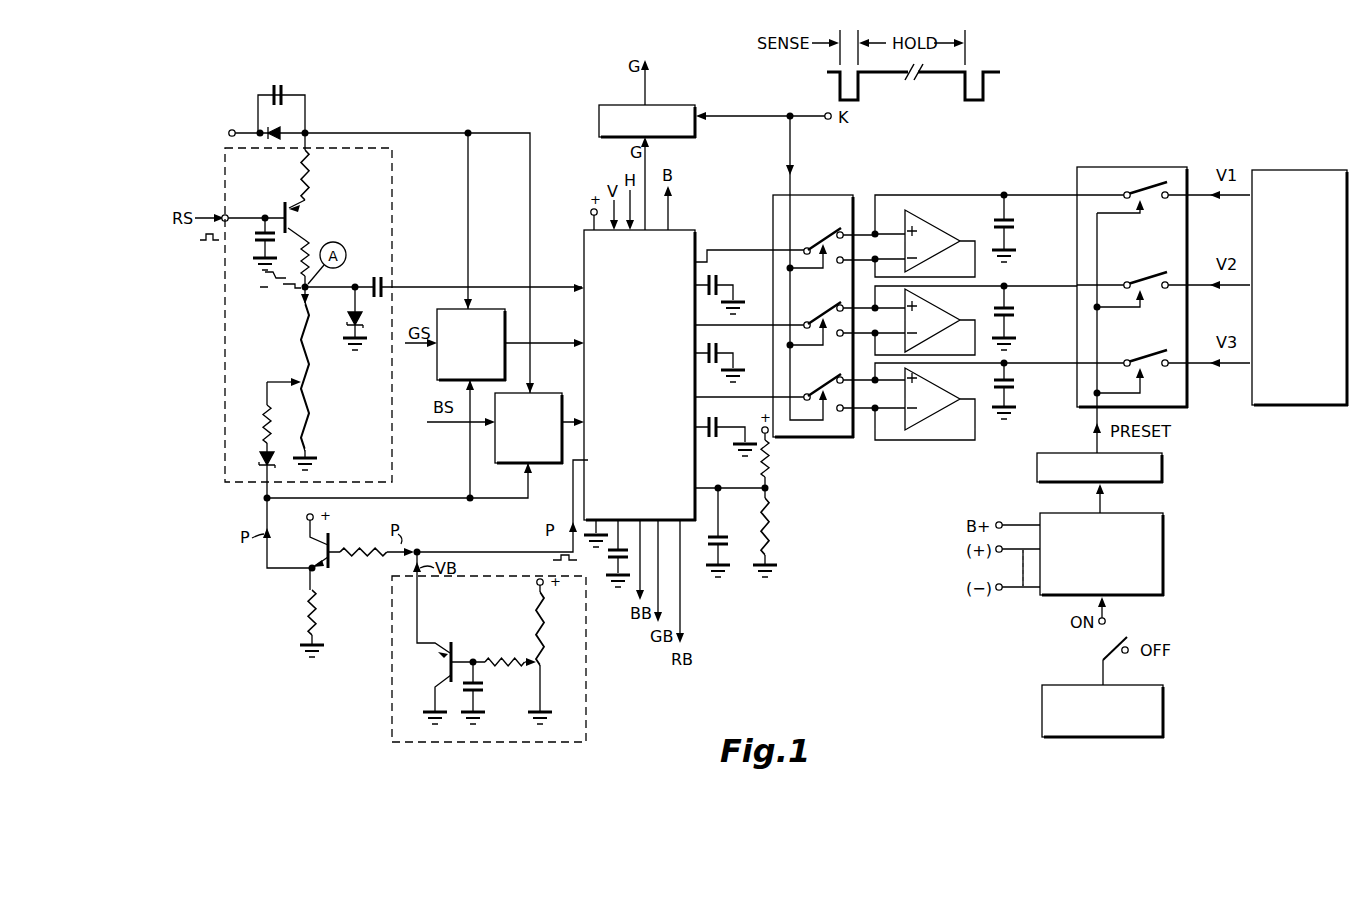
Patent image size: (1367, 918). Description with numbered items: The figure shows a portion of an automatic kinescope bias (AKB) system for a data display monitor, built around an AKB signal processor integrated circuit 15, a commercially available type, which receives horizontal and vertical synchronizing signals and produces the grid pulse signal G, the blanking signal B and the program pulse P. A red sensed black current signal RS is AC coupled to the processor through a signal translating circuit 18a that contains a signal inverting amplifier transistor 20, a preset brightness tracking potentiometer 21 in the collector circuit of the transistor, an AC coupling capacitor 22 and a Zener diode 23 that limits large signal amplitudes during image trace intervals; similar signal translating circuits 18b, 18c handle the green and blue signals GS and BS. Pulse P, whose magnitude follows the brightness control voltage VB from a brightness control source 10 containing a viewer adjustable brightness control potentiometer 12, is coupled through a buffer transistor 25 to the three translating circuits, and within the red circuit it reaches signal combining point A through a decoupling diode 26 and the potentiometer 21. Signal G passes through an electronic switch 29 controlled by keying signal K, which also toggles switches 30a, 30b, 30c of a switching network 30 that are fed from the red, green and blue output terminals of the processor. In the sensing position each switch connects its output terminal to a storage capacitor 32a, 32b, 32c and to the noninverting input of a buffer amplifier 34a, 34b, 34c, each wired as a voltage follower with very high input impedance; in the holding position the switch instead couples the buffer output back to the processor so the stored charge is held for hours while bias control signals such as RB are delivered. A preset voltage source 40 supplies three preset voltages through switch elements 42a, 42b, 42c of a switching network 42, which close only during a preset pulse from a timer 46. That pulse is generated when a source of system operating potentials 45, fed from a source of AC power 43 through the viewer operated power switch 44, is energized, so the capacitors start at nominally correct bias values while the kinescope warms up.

The brightness control source 10 is at (586, 698).
The brightness control potentiometer 12 is at (526, 640).
The AKB signal processor integrated circuit 15 is at (651, 330).
The signal translating circuit 18a is at (393, 213).
The signal translating circuit 18b is at (505, 320).
The signal translating circuit 18c is at (513, 468).
The signal inverting amplifier transistor 20 is at (333, 225).
The preset brightness tracking potentiometer 21 is at (294, 370).
The AC coupling capacitor 22 is at (379, 275).
The Zener diode 23 is at (346, 316).
The buffer transistor 25 is at (307, 561).
The decoupling diode 26 is at (260, 448).
The electronic switch 29 is at (683, 105).
The switching network 30 is at (820, 437).
The switch 30a is at (831, 225).
The switch 30b is at (831, 302).
The switch 30c is at (831, 375).
The storage capacitor 32a is at (1014, 222).
The storage capacitor 32b is at (1014, 316).
The storage capacitor 32c is at (1014, 392).
The buffer amplifier 34a is at (944, 222).
The buffer amplifier 34b is at (944, 305).
The buffer amplifier 34c is at (948, 395).
The preset voltage source 40 is at (1303, 169).
The switching network 42 is at (1135, 167).
The switch element 42a is at (1175, 240).
The switch element 42b is at (1183, 322).
The switch element 42c is at (1185, 398).
The source of AC power 43 is at (1165, 710).
The power switch 44 is at (1084, 672).
The source of system operating potentials 45 is at (1165, 553).
The timer 46 is at (1165, 468).